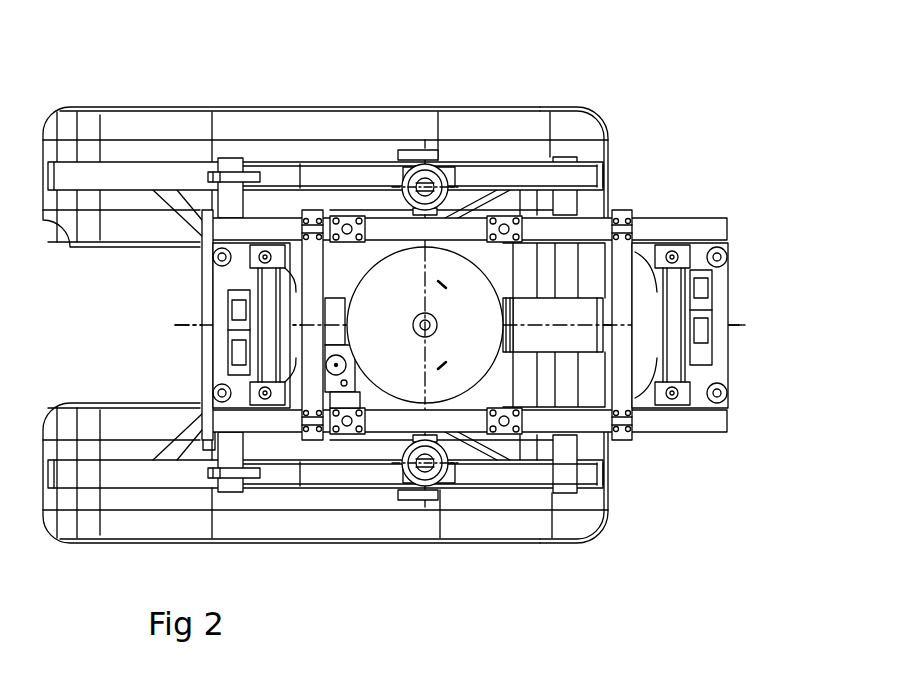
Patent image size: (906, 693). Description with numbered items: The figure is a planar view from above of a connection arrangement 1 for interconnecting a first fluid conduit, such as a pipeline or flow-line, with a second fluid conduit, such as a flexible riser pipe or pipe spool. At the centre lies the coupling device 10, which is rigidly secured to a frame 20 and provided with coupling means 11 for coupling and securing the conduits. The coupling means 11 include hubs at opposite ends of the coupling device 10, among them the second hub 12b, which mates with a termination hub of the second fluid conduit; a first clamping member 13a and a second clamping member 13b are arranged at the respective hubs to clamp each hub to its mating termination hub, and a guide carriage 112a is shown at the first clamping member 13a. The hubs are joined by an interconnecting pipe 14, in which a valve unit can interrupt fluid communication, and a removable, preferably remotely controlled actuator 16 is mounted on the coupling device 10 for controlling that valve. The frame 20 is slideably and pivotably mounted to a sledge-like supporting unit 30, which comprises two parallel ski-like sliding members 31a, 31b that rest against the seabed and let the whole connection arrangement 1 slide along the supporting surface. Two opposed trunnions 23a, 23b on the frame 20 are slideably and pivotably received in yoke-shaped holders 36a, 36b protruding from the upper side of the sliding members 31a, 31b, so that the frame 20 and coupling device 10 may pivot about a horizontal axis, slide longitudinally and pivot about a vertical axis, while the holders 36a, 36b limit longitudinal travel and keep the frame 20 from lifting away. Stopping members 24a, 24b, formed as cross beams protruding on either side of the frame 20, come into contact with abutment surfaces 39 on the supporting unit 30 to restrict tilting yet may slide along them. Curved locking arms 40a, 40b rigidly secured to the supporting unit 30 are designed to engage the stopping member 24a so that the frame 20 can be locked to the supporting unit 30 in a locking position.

The connection arrangement 1 is at (685, 120).
The coupling device 10 is at (200, 348).
The coupling means 11 is at (272, 233).
The second hub 12b is at (720, 307).
The first clamping member 13a is at (250, 273).
The second clamping member 13b is at (702, 290).
The guide carriage 112a is at (222, 311).
The interconnecting pipe 14 is at (523, 343).
The actuator 16 is at (445, 260).
The frame 20 is at (585, 225).
The trunnion 23a is at (413, 495).
The trunnion 23b is at (413, 152).
The stopping member 24a is at (230, 448).
The stopping member 24b is at (565, 453).
The supporting unit 30 is at (175, 100).
The sliding member 31a is at (590, 518).
The sliding member 31b is at (583, 123).
The holder 36a is at (338, 475).
The holder 36b is at (333, 170).
The abutment surfaces 39 is at (110, 177).
The curved locking arm 40a is at (238, 478).
The curved locking arm 40b is at (233, 175).